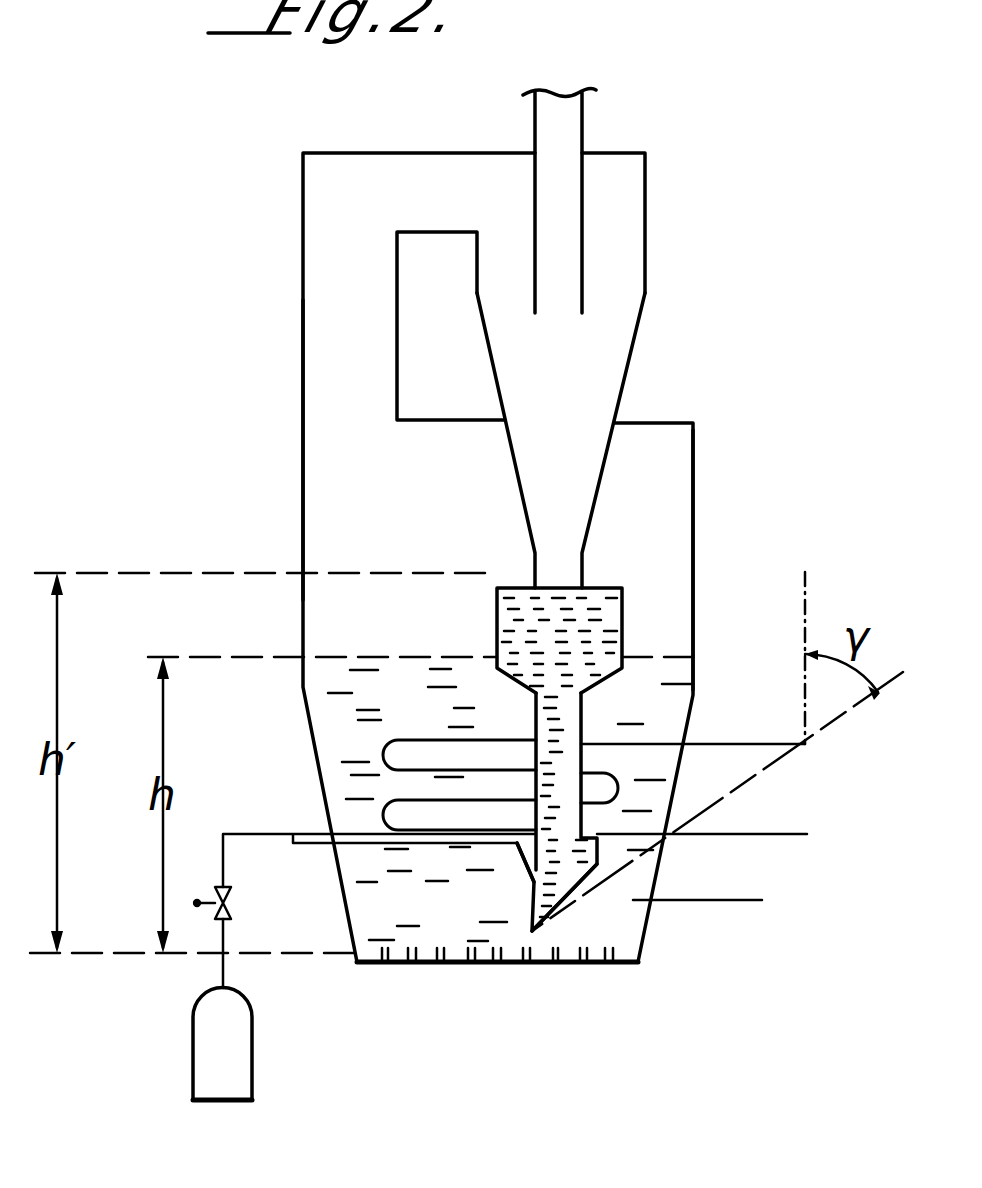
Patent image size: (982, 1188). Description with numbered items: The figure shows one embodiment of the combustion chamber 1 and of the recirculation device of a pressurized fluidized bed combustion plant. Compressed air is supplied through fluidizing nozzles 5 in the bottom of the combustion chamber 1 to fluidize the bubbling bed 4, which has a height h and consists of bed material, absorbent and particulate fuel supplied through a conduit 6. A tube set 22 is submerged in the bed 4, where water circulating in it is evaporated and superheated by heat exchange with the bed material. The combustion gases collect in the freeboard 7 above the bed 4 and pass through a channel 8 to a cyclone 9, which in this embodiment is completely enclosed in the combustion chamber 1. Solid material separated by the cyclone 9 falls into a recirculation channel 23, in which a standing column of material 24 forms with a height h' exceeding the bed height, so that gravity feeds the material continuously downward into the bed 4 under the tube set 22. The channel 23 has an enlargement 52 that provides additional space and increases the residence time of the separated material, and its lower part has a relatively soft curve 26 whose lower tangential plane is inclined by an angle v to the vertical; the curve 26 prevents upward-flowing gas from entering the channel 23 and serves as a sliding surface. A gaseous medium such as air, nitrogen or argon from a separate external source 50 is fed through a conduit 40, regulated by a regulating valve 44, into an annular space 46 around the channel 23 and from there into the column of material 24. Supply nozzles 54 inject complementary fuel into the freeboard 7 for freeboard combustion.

The combustion chamber 1 is at (650, 437).
The bed 4 is at (312, 727).
The fluidizing nozzles 5 is at (522, 962).
The conduit 6 is at (700, 900).
The space (freeboard) 7 is at (490, 560).
The channel 8 is at (358, 270).
The separating member (cyclone) 9 is at (572, 400).
The tube set 22 is at (743, 744).
The recirculation channel 23 is at (581, 723).
The column of material 24 is at (563, 745).
The curve 26 is at (575, 892).
The conduit 40 is at (308, 834).
The regulating valve 44 is at (232, 917).
The annular space 46 is at (524, 846).
The separate external source 50 is at (233, 1052).
The enlargement 52 is at (612, 610).
The supply nozzles 54 is at (275, 438).